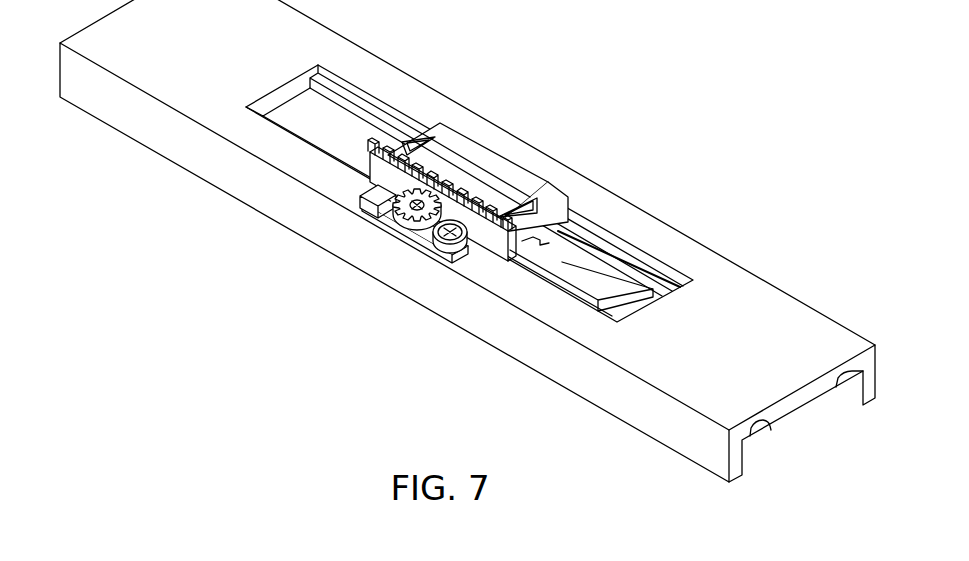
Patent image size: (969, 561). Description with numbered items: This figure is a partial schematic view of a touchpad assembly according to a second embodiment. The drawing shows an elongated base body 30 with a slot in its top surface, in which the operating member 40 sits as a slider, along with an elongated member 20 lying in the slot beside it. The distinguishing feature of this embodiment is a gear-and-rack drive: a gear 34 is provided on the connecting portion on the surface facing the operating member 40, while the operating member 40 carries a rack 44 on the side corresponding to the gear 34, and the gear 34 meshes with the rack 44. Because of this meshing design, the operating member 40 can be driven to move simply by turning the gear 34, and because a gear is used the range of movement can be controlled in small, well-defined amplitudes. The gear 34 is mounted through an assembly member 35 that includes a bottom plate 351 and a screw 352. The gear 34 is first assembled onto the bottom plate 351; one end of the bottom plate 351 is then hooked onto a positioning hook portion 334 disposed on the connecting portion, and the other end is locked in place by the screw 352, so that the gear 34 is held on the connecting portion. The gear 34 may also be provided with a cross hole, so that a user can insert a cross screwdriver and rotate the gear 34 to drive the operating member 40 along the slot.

The guide bar 20 is at (607, 285).
The housing 30 is at (775, 323).
The gear 34 is at (379, 224).
The positioning hook portion 334 is at (362, 200).
The assembly member 35 is at (416, 296).
The bottom plate 351 is at (410, 236).
The screw 352 is at (445, 250).
The operating member 40 is at (497, 165).
The rack 44 is at (468, 258).